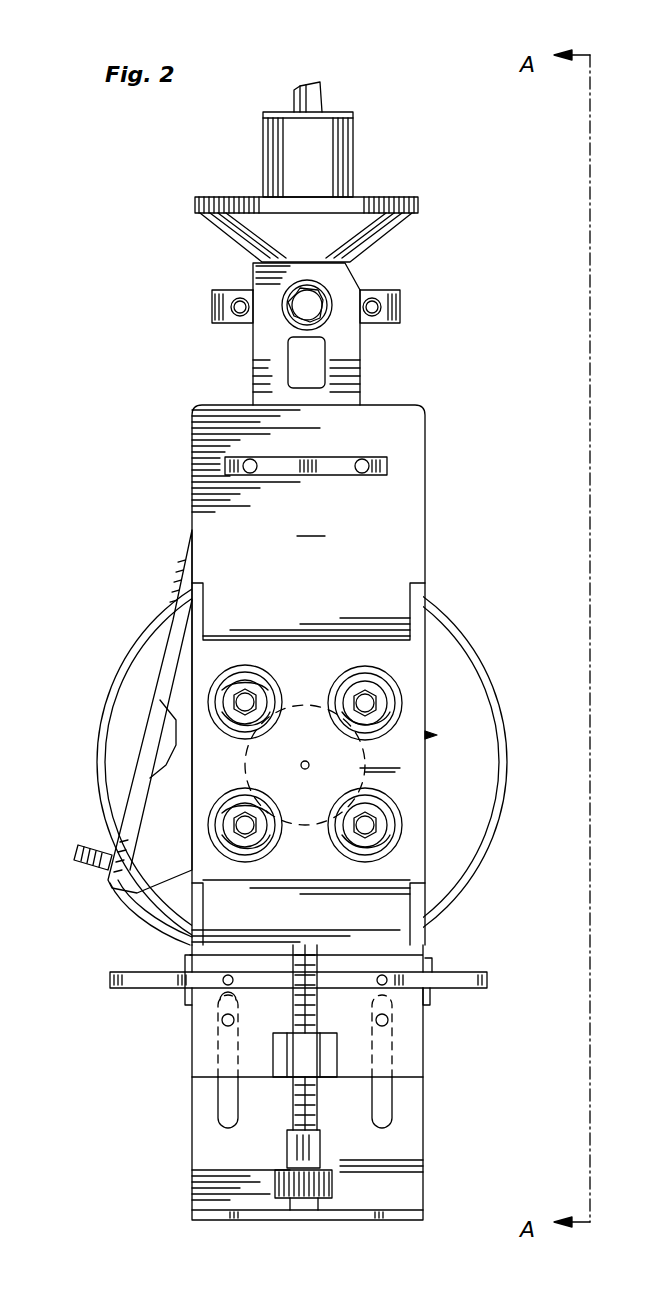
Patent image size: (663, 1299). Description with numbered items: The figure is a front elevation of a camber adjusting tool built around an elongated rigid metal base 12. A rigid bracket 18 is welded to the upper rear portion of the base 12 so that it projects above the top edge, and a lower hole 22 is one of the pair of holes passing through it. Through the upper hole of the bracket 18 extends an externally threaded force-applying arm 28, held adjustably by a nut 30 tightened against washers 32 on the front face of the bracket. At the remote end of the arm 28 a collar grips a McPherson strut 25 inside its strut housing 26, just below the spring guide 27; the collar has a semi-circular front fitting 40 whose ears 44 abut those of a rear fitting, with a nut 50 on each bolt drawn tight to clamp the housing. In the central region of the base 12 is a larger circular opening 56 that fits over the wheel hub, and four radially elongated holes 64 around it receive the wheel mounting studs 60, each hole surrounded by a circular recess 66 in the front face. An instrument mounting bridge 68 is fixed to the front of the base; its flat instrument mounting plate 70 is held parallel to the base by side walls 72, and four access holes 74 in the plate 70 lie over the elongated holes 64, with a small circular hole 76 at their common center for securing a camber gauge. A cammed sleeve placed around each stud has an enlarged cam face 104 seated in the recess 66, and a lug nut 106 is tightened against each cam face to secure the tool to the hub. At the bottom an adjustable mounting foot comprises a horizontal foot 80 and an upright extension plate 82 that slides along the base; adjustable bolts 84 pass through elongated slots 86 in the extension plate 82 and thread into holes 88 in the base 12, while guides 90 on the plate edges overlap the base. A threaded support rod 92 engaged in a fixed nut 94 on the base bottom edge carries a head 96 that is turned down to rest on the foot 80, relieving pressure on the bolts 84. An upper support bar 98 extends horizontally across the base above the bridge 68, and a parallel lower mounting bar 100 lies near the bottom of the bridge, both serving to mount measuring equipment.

The base 12 is at (308, 675).
The bracket 18 is at (262, 362).
The lower hole 22 is at (312, 367).
The McPherson strut 25 is at (322, 90).
The strut housing 26 is at (345, 140).
The spring guide 27 is at (250, 245).
The force-applying arm 28 is at (307, 305).
The nut 30 is at (300, 270).
The washer 32 is at (320, 320).
The front fitting 40 is at (395, 295).
The ears 44 is at (400, 318).
The nut 50 is at (383, 307).
The central opening 56 is at (365, 768).
The wheel mounting studs 60 is at (370, 703).
The elongated holes 64 is at (385, 696).
The circular recess 66 is at (380, 818).
The instrument mounting bridge 68 is at (437, 735).
The instrument mounting plate 70 is at (215, 757).
The side walls 72 is at (418, 598).
The access holes 74 is at (400, 690).
The small circular hole 76 is at (312, 740).
The foot 80 is at (405, 1215).
The extension plate 82 is at (200, 1135).
The adjustable bolts 84 is at (222, 1022).
The elongated slots 86 is at (225, 1093).
The holes 88 is at (388, 1024).
The guides 90 is at (432, 1000).
The support rod 92 is at (228, 996).
The fixed nut 94 is at (280, 1055).
The head 96 is at (335, 1182).
The upper support bar 98 is at (345, 457).
The lower mounting bar 100 is at (470, 970).
The cam face 104 is at (235, 720).
The lug nut 106 is at (380, 720).